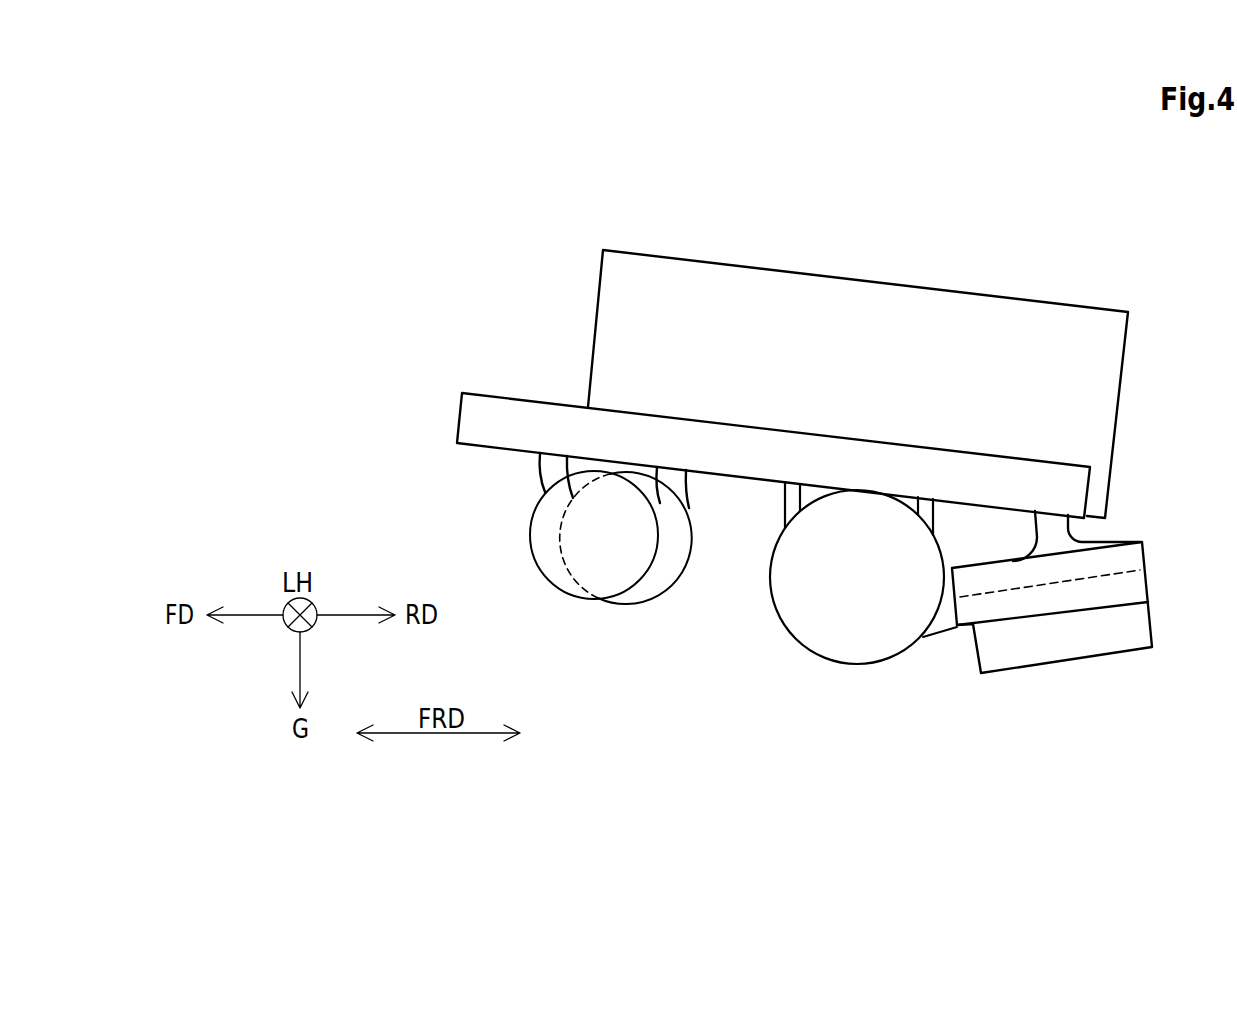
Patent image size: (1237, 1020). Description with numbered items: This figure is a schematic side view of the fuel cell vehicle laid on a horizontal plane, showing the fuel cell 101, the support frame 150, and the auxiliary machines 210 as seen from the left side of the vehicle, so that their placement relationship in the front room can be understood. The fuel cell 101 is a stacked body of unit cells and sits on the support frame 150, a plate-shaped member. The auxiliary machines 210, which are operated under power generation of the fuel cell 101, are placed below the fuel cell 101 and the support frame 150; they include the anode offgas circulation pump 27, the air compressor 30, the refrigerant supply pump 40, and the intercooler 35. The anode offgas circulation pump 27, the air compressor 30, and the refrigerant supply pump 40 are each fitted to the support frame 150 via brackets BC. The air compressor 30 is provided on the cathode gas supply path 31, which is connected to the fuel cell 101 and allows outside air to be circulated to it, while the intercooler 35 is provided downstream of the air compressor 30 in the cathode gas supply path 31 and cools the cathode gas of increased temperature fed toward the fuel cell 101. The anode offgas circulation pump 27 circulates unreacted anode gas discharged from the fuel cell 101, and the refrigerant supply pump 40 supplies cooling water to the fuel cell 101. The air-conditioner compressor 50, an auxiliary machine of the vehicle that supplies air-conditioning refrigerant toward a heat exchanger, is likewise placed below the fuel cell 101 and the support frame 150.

The fuel cell 101 is at (1042, 300).
The support frame 150 is at (497, 394).
The air-conditioner compressor 50 is at (558, 573).
The refrigerant supply pump 40 is at (673, 573).
The air compressor 30 is at (838, 652).
The cathode gas supply path 31 is at (945, 624).
The intercooler 35 is at (1058, 652).
The anode offgas circulation pump 27 is at (1125, 555).
The auxiliary machines 210 is at (1196, 742).
The brackets BC is at (542, 462).